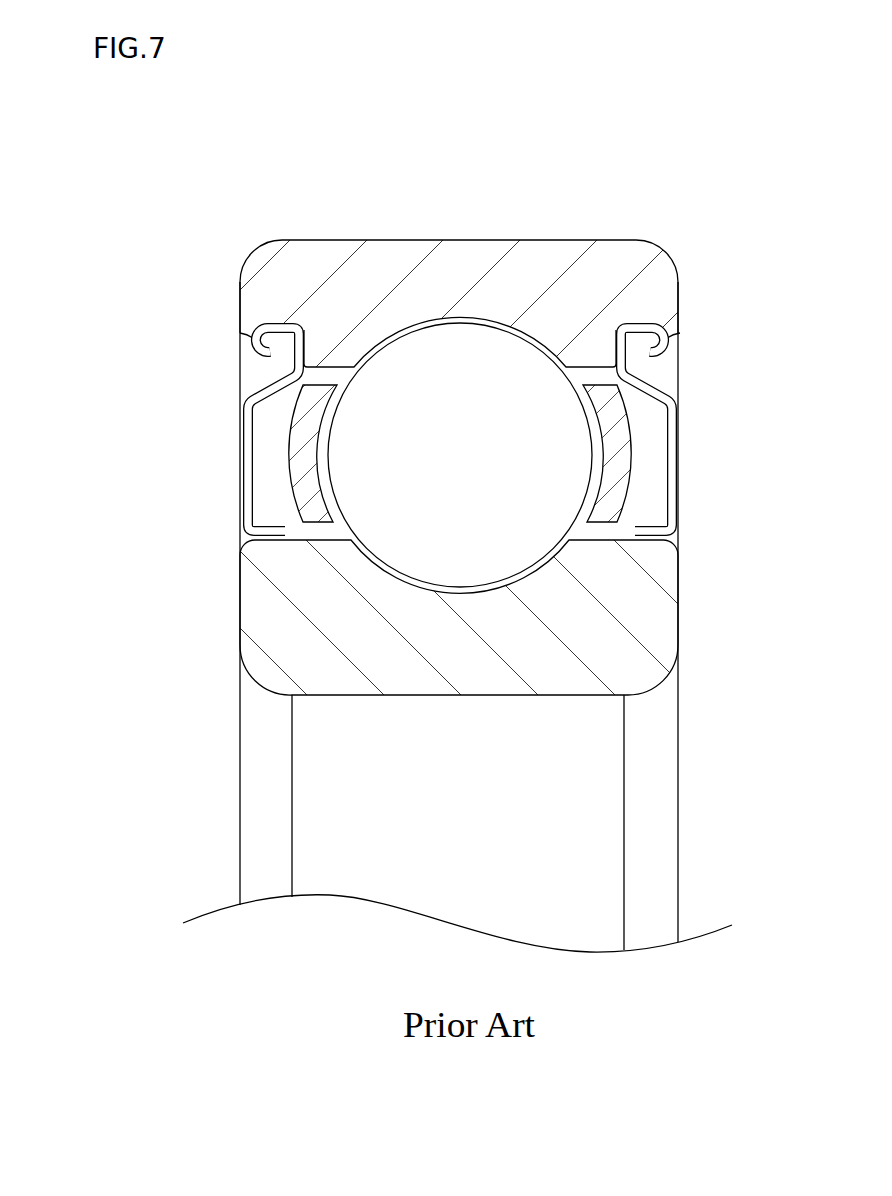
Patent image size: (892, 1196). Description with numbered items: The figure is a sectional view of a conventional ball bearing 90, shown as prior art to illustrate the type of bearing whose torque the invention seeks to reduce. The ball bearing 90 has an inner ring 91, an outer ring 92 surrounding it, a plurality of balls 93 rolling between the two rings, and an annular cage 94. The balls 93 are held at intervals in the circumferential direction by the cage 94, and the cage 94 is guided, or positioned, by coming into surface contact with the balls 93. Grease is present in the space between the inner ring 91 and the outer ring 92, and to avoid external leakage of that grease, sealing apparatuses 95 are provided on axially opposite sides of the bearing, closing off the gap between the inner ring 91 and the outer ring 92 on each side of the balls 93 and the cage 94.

The ball bearing 90 is at (546, 238).
The inner ring 91 is at (240, 563).
The outer ring 92 is at (240, 287).
The balls 93 is at (466, 352).
The annular cage 94 is at (288, 419).
The sealing apparatuses 95 is at (250, 481).